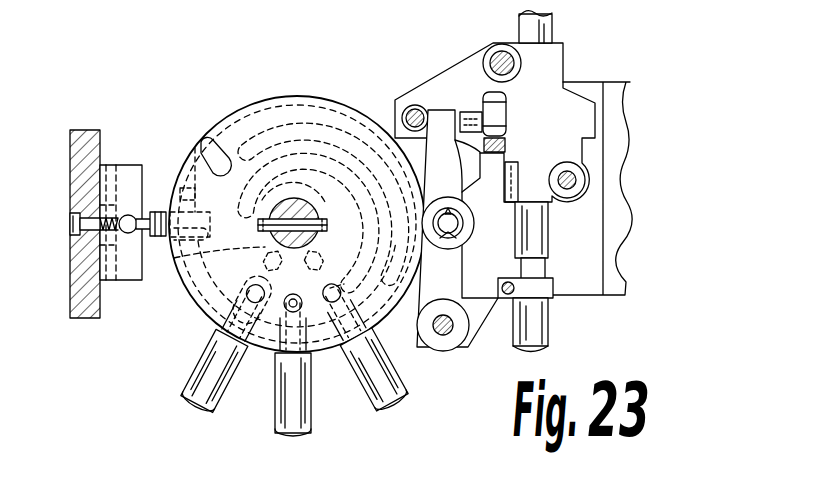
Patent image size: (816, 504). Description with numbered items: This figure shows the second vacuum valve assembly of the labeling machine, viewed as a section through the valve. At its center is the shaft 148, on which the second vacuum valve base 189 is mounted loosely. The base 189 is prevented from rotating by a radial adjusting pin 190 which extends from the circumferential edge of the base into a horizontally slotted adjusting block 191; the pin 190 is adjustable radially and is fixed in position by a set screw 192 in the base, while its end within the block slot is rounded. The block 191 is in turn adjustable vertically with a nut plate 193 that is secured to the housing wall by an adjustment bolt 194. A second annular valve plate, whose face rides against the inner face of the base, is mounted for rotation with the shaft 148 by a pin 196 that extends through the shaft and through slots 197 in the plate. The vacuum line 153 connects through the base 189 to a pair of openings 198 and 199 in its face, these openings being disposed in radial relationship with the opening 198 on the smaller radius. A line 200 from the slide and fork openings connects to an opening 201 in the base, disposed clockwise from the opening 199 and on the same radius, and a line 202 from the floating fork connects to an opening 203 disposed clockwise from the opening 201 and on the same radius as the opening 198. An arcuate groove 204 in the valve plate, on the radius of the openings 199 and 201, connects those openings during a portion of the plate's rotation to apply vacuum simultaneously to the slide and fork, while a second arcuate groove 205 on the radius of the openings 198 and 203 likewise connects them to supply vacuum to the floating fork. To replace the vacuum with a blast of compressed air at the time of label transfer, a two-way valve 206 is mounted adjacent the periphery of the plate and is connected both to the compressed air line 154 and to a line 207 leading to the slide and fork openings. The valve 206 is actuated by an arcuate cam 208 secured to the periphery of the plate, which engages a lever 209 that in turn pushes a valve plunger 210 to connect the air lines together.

The shaft 148 is at (301, 212).
The vacuum line 153 is at (398, 394).
The compressed air line 154 is at (550, 323).
The second vacuum valve base 189 is at (351, 86).
The radial adjusting pin 190 is at (153, 212).
The adjusting block 191 is at (121, 281).
The set screw 192 is at (195, 211).
The nut plate 193 is at (72, 211).
The adjustment bolt 194 is at (72, 231).
The pin 196 is at (248, 255).
The slots 197 is at (258, 242).
The opening 198 is at (314, 246).
The opening 199 is at (344, 284).
The line 200 is at (291, 436).
The opening 201 is at (298, 290).
The line 202 is at (205, 398).
The opening 203 is at (250, 272).
The arcuate groove 204 is at (303, 140).
The arcuate groove 205 is at (250, 190).
The two-way valve 206 is at (584, 88).
The line 207 is at (553, 30).
The arcuate cam 208 is at (190, 318).
The lever 209 is at (462, 271).
The valve plunger 210 is at (470, 115).